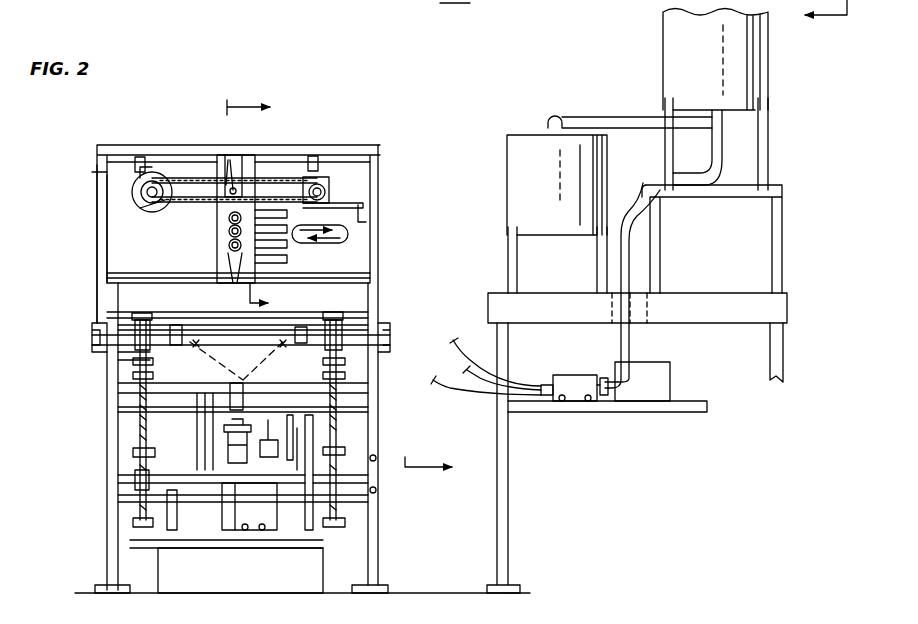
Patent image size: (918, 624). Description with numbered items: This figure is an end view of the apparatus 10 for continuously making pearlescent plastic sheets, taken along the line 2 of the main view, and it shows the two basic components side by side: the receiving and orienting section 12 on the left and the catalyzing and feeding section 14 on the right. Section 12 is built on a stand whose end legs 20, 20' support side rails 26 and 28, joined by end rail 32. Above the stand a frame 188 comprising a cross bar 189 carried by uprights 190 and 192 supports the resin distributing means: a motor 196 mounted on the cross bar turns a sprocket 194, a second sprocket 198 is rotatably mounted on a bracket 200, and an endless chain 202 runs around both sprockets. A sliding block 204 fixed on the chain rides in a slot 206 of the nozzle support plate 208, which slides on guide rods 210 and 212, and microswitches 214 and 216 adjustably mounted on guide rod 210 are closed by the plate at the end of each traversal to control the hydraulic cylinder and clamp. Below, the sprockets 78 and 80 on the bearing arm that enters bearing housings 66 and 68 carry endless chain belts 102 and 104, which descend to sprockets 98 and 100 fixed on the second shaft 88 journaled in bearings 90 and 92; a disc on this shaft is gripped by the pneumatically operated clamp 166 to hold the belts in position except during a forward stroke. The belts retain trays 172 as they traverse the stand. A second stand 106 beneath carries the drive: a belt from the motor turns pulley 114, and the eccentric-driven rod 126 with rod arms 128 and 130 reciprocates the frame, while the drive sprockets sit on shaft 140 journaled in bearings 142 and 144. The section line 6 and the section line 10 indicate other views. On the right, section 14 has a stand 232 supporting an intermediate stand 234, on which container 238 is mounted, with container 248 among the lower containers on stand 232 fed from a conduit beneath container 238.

The receiving and orienting section 12 is at (97, 150).
The frame 188 is at (375, 147).
The cross bar 189 is at (350, 150).
The upright 190 is at (380, 162).
The guide rod 210 is at (97, 173).
The upright 192 is at (97, 200).
The microswitch 214 is at (160, 130).
The microswitch 216 is at (315, 156).
The endless chain 202 is at (325, 132).
The sliding block 204 is at (212, 165).
The motor 196 is at (140, 205).
The sprocket 194 is at (150, 205).
The second sprocket 198 is at (330, 192).
The bracket 200 is at (366, 222).
The nozzle support plate 208 is at (218, 238).
The slot 206 is at (237, 152).
The guide rod 212 is at (125, 273).
The section line 6 is at (261, 204).
The apparatus 10 is at (445, 468).
The section line 2 is at (643, 11).
The side rail 28 is at (362, 325).
The side rail 26 is at (118, 323).
The bearing housing 66 is at (92, 332).
The sprocket 80 is at (396, 321).
The bearing housing 68 is at (385, 342).
The end rail 32 is at (120, 360).
The endless chain belt 102 is at (140, 390).
The endless chain belt 104 is at (336, 440).
The sprocket 78 is at (173, 292).
The tray 172 is at (190, 338).
The rod 126 is at (236, 398).
The rod arm 128 is at (169, 376).
The rod arm 130 is at (289, 378).
The second pulley 114 is at (200, 392).
The pneumatically operated clamp 166 is at (310, 427).
The bearing 144 is at (309, 530).
The bearing 90 is at (116, 484).
The sprocket 100 is at (340, 482).
The sprocket 98 is at (134, 470).
The bearing 92 is at (378, 470).
The end leg 20 is at (87, 557).
The end leg 20' is at (386, 560).
The bearing 142 is at (173, 527).
The second shaft 88 is at (223, 485).
The shaft 140 is at (233, 541).
The second stand 106 is at (318, 578).
The catalyzing and feeding section 14 is at (487, 300).
The stand 232 is at (783, 305).
The container 248 is at (524, 140).
The container 238 is at (748, 68).
The intermediate stand 234 is at (779, 195).